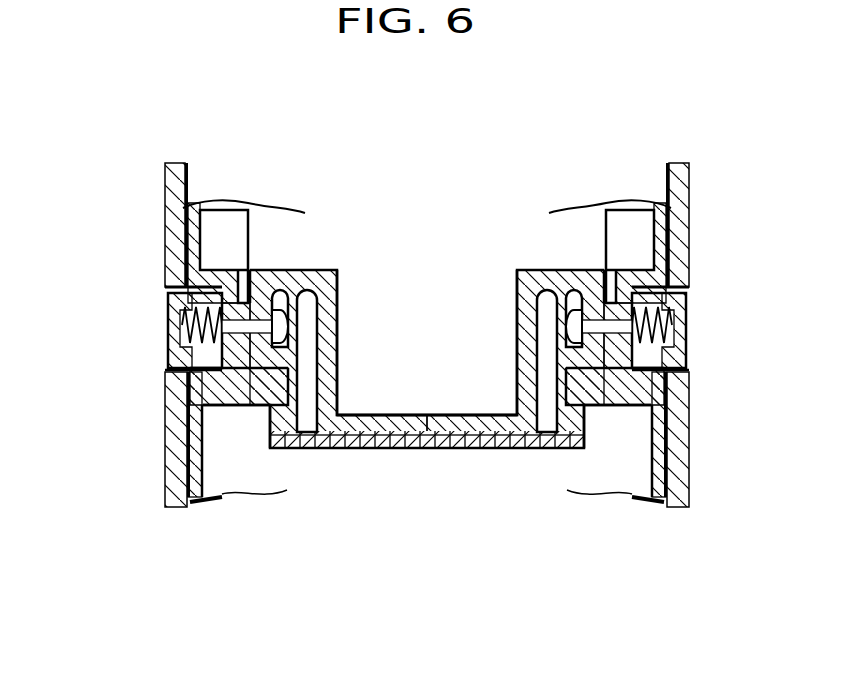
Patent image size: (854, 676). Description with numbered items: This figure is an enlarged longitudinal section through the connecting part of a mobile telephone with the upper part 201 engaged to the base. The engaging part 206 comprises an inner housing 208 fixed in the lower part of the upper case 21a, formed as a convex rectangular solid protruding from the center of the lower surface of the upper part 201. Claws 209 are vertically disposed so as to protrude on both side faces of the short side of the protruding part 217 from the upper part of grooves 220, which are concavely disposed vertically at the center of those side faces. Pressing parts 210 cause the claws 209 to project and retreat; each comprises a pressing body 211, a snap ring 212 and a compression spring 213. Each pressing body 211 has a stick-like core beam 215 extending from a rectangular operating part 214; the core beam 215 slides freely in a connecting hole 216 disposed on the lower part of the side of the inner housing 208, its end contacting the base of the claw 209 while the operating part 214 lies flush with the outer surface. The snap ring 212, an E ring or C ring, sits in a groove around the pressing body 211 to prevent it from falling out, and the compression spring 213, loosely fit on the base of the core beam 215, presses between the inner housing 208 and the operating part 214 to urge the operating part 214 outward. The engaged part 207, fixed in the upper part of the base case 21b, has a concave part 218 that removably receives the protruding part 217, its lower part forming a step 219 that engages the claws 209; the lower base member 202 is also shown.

The upper part 201 is at (412, 181).
The second frame member 202 is at (167, 497).
The upper case 21a is at (170, 218).
The base case 21b is at (173, 477).
The engaging part 206 is at (427, 349).
The engaged part 207 is at (452, 450).
The inner housing 208 is at (338, 280).
The claws 209 is at (530, 450).
The pressing parts 210 is at (186, 292).
The pressing body 211 is at (168, 300).
The snap ring 212 is at (258, 322).
The compression spring 213 is at (200, 396).
The operating part 214 is at (180, 333).
The core beam 215 is at (250, 330).
The connecting holes 216 is at (250, 303).
The protruding part 217 is at (455, 368).
The concave part 218 is at (384, 416).
The step 219 is at (552, 413).
The grooves 220 is at (541, 317).